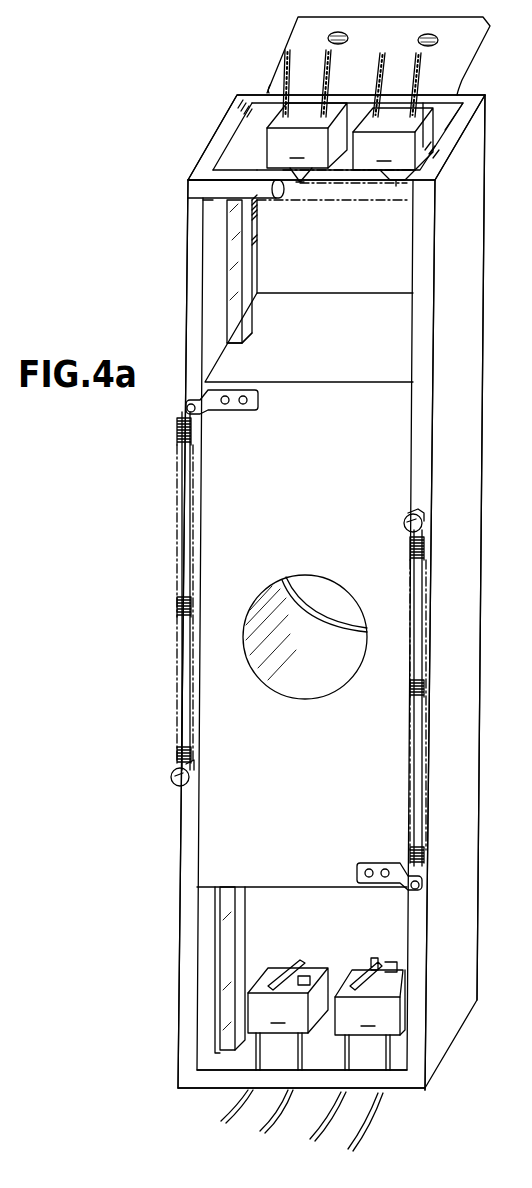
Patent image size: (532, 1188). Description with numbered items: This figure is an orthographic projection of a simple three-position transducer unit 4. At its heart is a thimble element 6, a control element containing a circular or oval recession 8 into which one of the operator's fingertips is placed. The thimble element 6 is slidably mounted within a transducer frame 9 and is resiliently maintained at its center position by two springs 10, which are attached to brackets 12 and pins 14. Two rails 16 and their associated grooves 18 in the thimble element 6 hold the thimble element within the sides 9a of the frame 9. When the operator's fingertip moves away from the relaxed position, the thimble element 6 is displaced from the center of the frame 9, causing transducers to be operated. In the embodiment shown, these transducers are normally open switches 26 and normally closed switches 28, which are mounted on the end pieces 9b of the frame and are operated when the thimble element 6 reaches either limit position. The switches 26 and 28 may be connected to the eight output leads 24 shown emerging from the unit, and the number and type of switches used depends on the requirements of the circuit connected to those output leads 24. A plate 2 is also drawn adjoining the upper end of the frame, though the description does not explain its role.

The mounting plate 2 is at (460, 50).
The transducer unit 4 is at (168, 300).
The thimble element 6 is at (212, 526).
The recession 8 is at (339, 590).
The transducer frame 9 is at (488, 330).
The sides 9a is at (455, 838).
The end pieces 9b is at (262, 98).
The springs 10 is at (177, 607).
The brackets 12 is at (188, 404).
The pins 14 is at (421, 523).
The rails 16 is at (433, 145).
The grooves 18 is at (249, 333).
The output leads 24 is at (324, 68).
The normally open switches 26 is at (297, 568).
The normally closed switches 28 is at (384, 571).